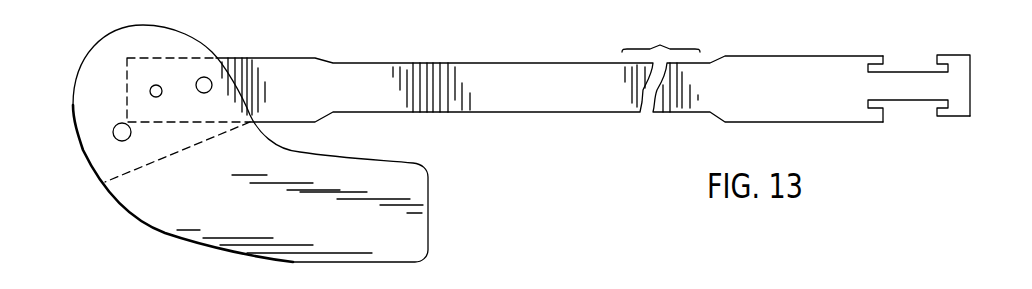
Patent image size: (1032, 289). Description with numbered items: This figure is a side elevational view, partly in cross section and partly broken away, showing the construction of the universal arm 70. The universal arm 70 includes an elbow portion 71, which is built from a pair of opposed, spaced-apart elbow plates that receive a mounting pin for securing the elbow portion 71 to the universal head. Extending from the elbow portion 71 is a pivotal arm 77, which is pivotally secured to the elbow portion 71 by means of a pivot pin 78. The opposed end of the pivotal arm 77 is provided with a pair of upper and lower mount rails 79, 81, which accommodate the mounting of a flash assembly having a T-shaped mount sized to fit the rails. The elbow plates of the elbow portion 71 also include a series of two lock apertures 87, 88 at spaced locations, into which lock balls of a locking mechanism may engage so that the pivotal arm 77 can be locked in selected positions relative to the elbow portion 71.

The universal arm 70 is at (160, 233).
The elbow portion 71 is at (222, 240).
The pivotal arm 77 is at (535, 68).
The pivot pin 78 is at (161, 85).
The upper mount rail 79 is at (933, 61).
The lower mount rail 81 is at (883, 110).
The lock aperture 87 is at (116, 139).
The lock aperture 88 is at (211, 81).